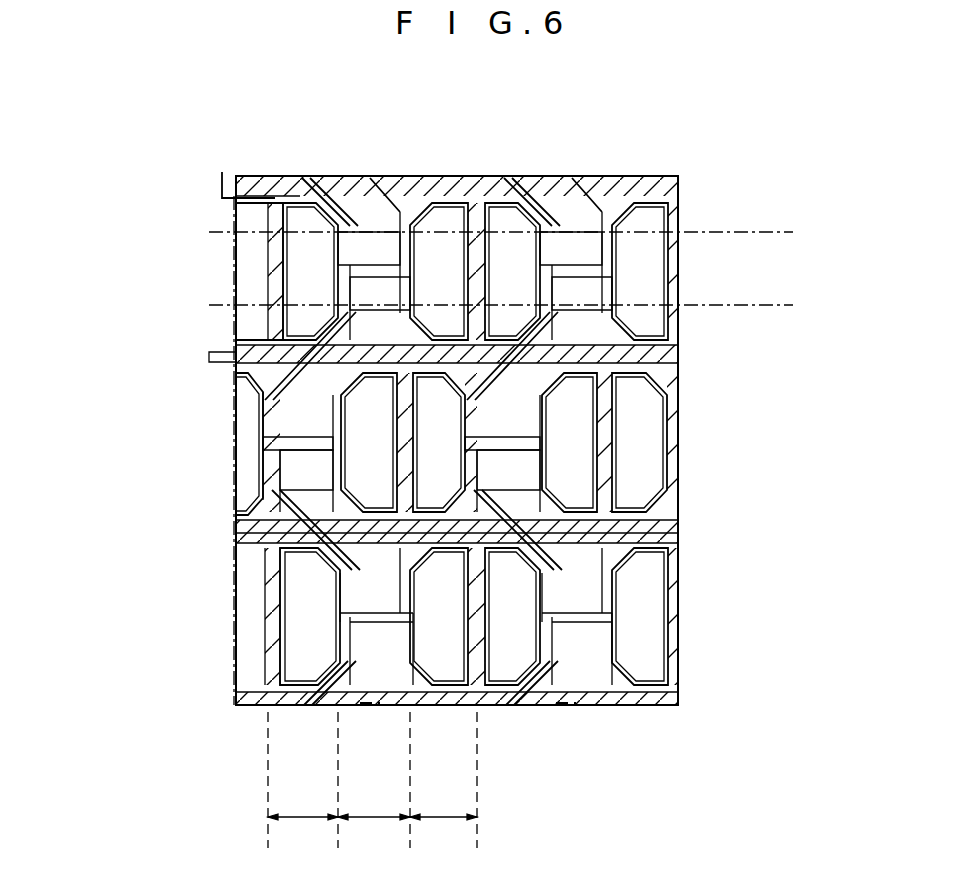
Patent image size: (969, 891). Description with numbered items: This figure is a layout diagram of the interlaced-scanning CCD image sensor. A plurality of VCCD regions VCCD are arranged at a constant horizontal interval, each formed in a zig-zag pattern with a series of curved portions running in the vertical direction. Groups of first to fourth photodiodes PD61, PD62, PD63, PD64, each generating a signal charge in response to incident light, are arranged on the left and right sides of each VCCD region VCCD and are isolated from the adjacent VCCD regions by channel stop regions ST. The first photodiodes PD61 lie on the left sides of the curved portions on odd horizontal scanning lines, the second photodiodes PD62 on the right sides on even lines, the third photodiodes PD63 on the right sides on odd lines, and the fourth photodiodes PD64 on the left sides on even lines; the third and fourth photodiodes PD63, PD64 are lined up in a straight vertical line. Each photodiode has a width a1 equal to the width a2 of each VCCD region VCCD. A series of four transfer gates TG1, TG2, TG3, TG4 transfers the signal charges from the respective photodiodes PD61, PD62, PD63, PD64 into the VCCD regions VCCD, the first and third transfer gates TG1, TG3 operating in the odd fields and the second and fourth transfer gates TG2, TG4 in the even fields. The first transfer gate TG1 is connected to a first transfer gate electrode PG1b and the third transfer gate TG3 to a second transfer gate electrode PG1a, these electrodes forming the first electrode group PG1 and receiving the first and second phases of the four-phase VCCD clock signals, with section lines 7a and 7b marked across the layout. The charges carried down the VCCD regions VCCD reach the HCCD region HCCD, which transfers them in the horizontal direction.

The VCCD region VCCD is at (346, 178).
The channel stop region ST is at (443, 180).
The first transfer gate electrode group PG1 is at (86, 183).
The second transfer gate electrode PG1a is at (210, 354).
The first transfer gate electrode PG1b is at (222, 172).
The section line 7a is at (209, 232).
The section line 7b is at (209, 280).
The first photodiode PD61 is at (410, 444).
The second photodiode PD62 is at (469, 442).
The third photodiode PD63 is at (539, 444).
The fourth photodiode PD64 is at (240, 420).
The first transfer gate TG1 is at (345, 276).
The second transfer gate TG2 is at (330, 486).
The third transfer gate TG3 is at (411, 280).
The fourth transfer gate TG4 is at (269, 438).
The HCCD region HCCD is at (370, 712).
The photodiode width a1 is at (372, 780).
The VCCD region width a2 is at (374, 804).